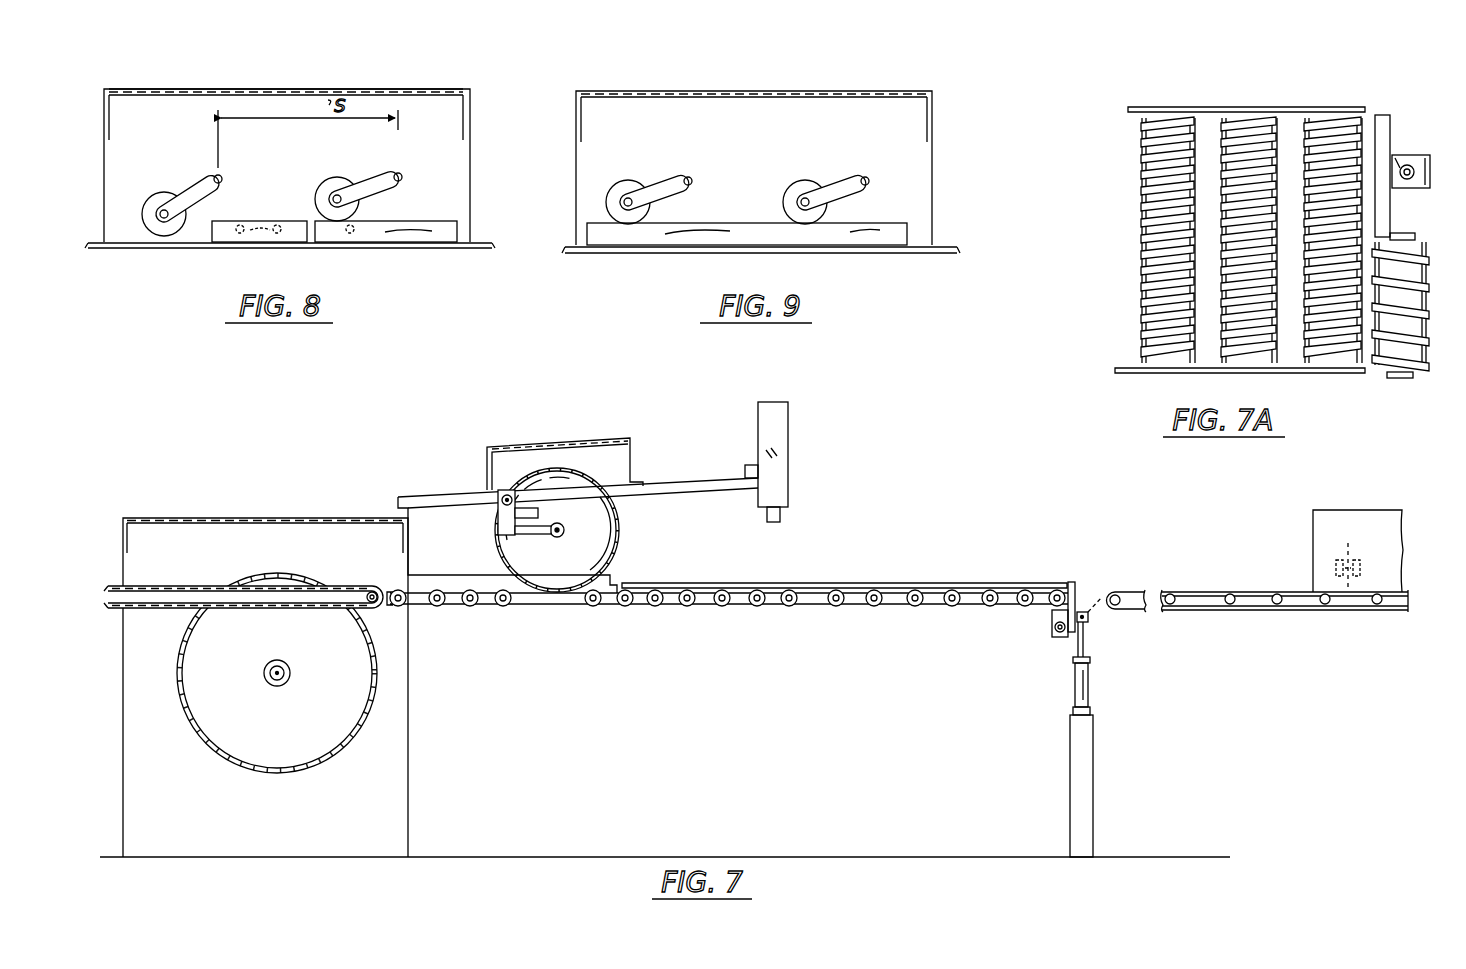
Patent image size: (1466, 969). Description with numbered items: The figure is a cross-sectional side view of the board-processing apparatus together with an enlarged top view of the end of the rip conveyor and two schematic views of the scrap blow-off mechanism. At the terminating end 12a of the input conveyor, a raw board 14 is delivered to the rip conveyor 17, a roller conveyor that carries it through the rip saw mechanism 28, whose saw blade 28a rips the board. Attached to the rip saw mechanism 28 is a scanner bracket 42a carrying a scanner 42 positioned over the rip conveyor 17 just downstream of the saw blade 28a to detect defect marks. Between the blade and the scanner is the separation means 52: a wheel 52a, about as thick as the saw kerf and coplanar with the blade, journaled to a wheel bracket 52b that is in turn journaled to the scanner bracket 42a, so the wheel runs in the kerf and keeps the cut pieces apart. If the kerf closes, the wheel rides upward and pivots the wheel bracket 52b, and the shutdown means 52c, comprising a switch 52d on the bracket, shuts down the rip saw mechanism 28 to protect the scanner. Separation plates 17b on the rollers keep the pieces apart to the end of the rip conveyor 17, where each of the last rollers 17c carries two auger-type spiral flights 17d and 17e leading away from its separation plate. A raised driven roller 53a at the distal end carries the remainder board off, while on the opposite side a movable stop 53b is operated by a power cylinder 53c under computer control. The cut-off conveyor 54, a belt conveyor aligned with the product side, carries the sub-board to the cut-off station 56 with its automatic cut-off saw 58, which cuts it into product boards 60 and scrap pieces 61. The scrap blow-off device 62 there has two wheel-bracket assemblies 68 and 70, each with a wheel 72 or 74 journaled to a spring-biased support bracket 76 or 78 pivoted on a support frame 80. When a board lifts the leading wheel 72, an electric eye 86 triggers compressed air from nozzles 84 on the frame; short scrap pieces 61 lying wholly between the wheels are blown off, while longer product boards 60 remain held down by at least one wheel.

In FIG. 7, the terminating end of the input conveyor 12a is at (143, 585).
In FIG. 7, the raw board 14 is at (607, 585).
In FIG. 7, the rip conveyor 17 is at (866, 606).
In FIG. 7, the separation plates 17b is at (858, 583).
In FIG. 7A, the last rollers of the rip conveyor 17c is at (1219, 207).
In FIG. 7A, the spiral blade (flight) on remainder side 17d is at (1140, 177).
In FIG. 7A, the spiral blade (flight) 17e is at (1140, 285).
In FIG. 7, the rip saw mechanism 28 is at (410, 700).
In FIG. 7, the saw blade 28a is at (335, 758).
In FIG. 7, the scanner 42 is at (788, 440).
In FIG. 7, the scanner bracket 42a is at (672, 483).
In FIG. 7, the separation means 52 is at (567, 502).
In FIG. 7, the wheel 52a is at (620, 553).
In FIG. 7, the wheel bracket 52b is at (505, 522).
In FIG. 7, the shutdown means 52c is at (536, 503).
In FIG. 7, the switch 52d is at (503, 538).
In FIG. 7A, the driven roller 53a is at (1385, 378).
In FIG. 7A, the movable stop 53b is at (1383, 115).
In FIG. 7, the movable stop 53b is at (1073, 582).
In FIG. 7A, the power cylinder 53c is at (1425, 155).
In FIG. 7, the power cylinder 53c is at (1090, 666).
In FIG. 8, the cut-off conveyor 54 is at (488, 243).
In FIG. 9, the cut-off conveyor 54 is at (942, 247).
In FIG. 7, the cut-off conveyor 54 is at (1148, 590).
In FIG. 7, the cut-off station 56 is at (1313, 527).
In FIG. 7, the cut-off saw 58 is at (1348, 543).
In FIG. 8, the product boards 60 is at (410, 222).
In FIG. 9, the product boards 60 is at (725, 223).
In FIG. 8, the scrap pieces 61 is at (256, 221).
In FIG. 8, the scrap blow-off device 62 is at (435, 85).
In FIG. 9, the scrap blow-off device 62 is at (856, 89).
In FIG. 8, the wheel-bracket assembly 68 is at (171, 177).
In FIG. 9, the wheel-bracket assembly 68 is at (654, 175).
In FIG. 8, the wheel-bracket assembly 70 is at (361, 177).
In FIG. 9, the wheel-bracket assembly 70 is at (842, 175).
In FIG. 8, the wheel 72 is at (151, 200).
In FIG. 9, the wheel 72 is at (621, 182).
In FIG. 8, the wheel 74 is at (325, 183).
In FIG. 9, the wheel 74 is at (800, 182).
In FIG. 8, the support bracket 76 is at (210, 179).
In FIG. 9, the support bracket 76 is at (690, 176).
In FIG. 8, the support bracket 78 is at (400, 172).
In FIG. 9, the support bracket 78 is at (868, 176).
In FIG. 8, the support frame 80 is at (272, 89).
In FIG. 8, the nozzles 84 is at (278, 236).
In FIG. 8, the electric eye 86 is at (350, 236).